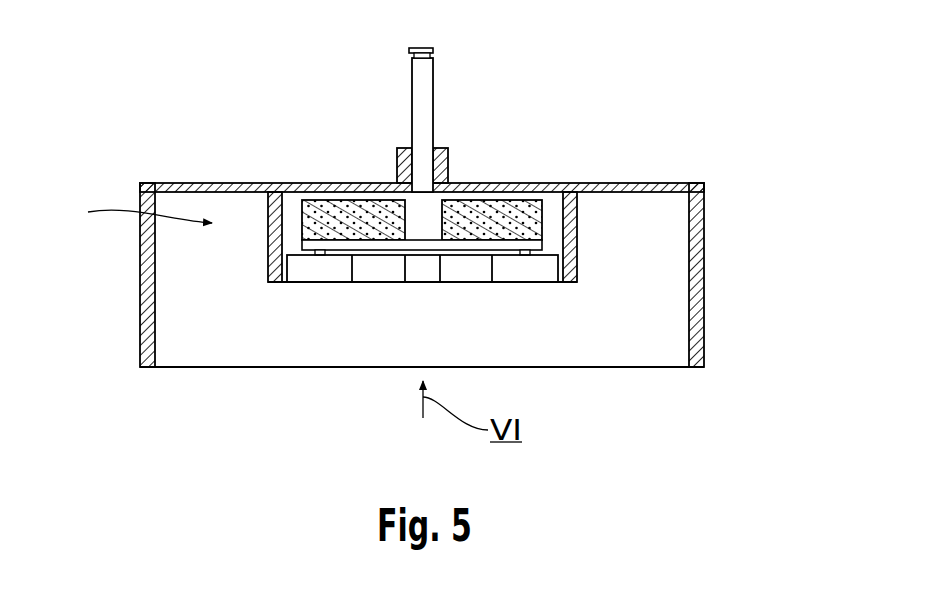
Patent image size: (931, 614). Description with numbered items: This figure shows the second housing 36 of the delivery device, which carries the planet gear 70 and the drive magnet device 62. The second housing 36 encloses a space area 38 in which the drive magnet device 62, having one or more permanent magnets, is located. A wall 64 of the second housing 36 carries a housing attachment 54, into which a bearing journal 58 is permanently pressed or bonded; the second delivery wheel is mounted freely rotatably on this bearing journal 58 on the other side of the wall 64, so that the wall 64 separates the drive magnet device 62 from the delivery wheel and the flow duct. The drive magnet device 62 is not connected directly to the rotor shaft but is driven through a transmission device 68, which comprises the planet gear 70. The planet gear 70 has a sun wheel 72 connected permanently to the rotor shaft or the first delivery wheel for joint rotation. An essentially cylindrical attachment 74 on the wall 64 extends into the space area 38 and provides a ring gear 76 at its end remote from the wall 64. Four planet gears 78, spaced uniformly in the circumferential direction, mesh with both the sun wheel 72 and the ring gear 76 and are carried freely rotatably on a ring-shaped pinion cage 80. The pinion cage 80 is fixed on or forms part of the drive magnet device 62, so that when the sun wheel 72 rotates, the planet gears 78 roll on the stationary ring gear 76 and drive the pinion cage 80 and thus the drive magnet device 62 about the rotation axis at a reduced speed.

The second housing 36 is at (707, 257).
The space area 38 is at (180, 305).
The housing attachment 54 is at (448, 163).
The bearing journal 58 is at (435, 77).
The drive magnet device 62 is at (351, 205).
The wall 64 is at (221, 183).
The transmission device 68 is at (133, 213).
The planet gear 70 is at (590, 282).
The sun wheel 72 is at (375, 267).
The attachment 74 is at (577, 237).
The ring gear 76 is at (562, 267).
The planet gears 78 is at (312, 268).
The pinion cage 80 is at (508, 248).